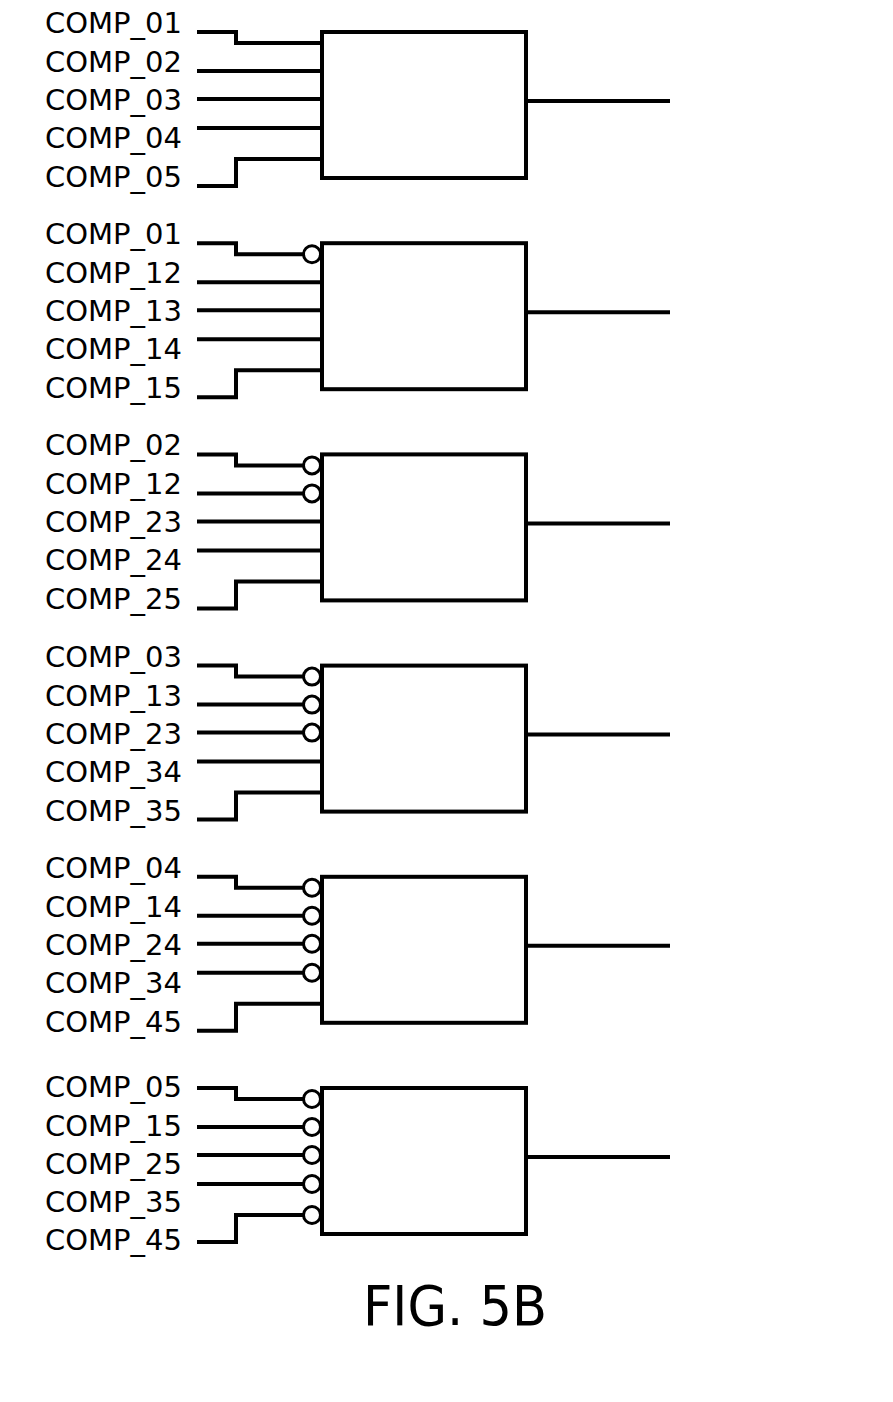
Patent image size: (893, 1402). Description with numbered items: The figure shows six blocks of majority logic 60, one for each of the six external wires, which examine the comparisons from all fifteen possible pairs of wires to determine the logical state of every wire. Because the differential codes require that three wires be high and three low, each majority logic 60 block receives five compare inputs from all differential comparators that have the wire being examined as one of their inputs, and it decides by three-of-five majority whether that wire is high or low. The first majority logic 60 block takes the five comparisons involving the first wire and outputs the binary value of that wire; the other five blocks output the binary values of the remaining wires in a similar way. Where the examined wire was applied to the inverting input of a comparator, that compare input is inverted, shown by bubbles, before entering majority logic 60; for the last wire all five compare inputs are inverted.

The majority logic 60 is at (509, 68).